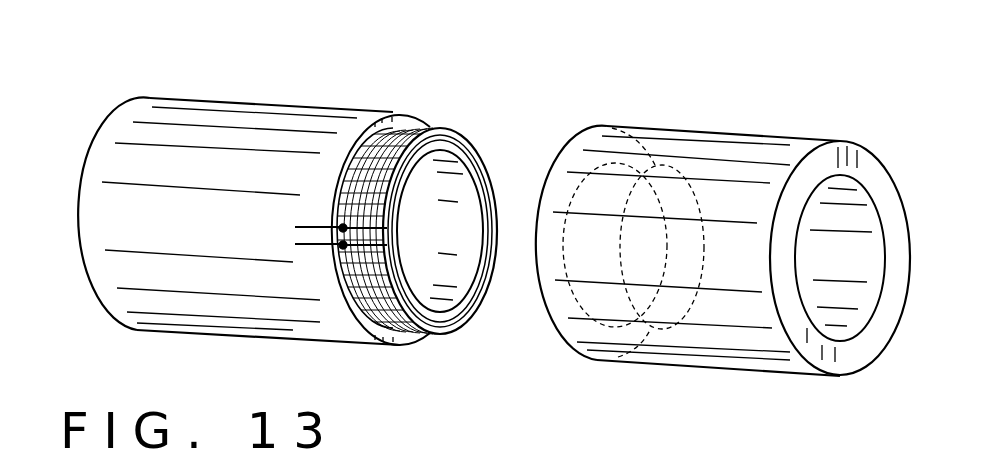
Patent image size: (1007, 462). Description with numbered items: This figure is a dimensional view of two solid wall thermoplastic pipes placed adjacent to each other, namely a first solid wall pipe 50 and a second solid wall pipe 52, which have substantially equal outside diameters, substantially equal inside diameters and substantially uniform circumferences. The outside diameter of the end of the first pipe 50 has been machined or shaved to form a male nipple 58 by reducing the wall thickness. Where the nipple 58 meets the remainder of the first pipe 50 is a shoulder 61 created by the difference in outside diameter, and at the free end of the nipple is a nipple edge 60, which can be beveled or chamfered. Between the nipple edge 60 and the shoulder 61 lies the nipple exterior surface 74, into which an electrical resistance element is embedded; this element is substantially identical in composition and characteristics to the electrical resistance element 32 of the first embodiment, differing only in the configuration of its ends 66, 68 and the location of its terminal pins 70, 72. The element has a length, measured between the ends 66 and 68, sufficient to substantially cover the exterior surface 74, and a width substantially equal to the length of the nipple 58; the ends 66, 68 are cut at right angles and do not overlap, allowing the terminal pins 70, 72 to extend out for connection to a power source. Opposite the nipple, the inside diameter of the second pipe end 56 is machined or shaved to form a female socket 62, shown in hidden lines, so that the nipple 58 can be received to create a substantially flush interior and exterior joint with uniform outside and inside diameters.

The first solid wall pipe 50 is at (240, 88).
The second solid wall pipe 52 is at (747, 120).
The second pipe end 56 is at (603, 126).
The male nipple 58 is at (491, 144).
The nipple edge 60 is at (441, 334).
The shoulder 61 is at (393, 114).
The female socket 62 is at (663, 167).
The end of electrical resistance element 66 is at (388, 250).
The end of electrical resistance element 68 is at (378, 224).
The terminal pin 70 is at (310, 247).
The terminal pin 72 is at (309, 224).
The nipple exterior surface 74 is at (433, 127).
The electrical resistance element 32 is at (377, 304).